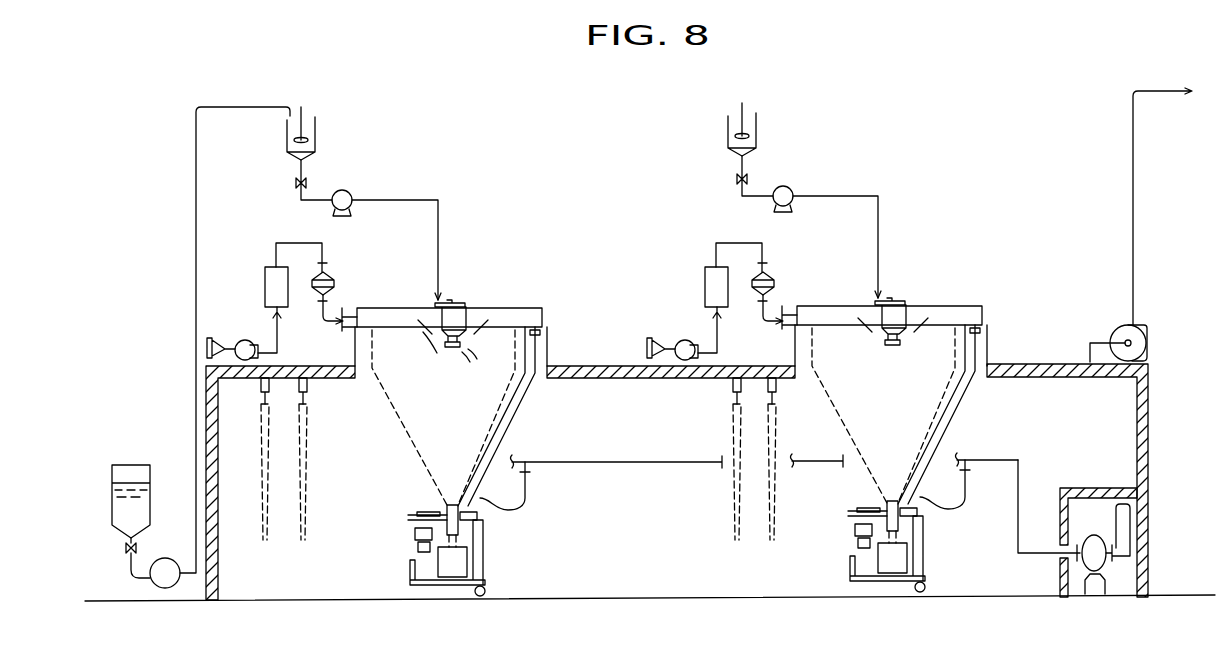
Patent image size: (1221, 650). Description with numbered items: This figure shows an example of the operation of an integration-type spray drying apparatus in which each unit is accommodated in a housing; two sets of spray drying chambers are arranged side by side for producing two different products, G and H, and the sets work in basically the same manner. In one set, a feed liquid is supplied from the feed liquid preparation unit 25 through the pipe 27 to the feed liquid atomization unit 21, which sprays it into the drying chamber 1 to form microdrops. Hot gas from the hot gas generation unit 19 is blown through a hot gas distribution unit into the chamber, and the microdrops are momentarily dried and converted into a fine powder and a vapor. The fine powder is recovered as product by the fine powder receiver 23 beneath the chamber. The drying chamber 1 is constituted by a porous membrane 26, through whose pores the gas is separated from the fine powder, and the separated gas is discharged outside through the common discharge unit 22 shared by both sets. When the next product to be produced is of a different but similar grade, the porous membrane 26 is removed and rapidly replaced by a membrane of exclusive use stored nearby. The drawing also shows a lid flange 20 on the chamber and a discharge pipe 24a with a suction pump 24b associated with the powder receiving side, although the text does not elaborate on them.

The drying chamber 1 is at (399, 415).
The hot gas generation unit 19 is at (264, 268).
The vessel lid flange 20 is at (406, 307).
The feed liquid atomization unit 21 is at (456, 302).
The common discharge unit 22 is at (1120, 330).
The fine powder receiver 23 is at (486, 557).
The discharge pipe 24a is at (504, 431).
The suction pump 24b is at (1125, 558).
The feed liquid preparation unit 25 is at (150, 496).
The porous membrane 26 is at (863, 470).
The pipe 27 is at (408, 199).